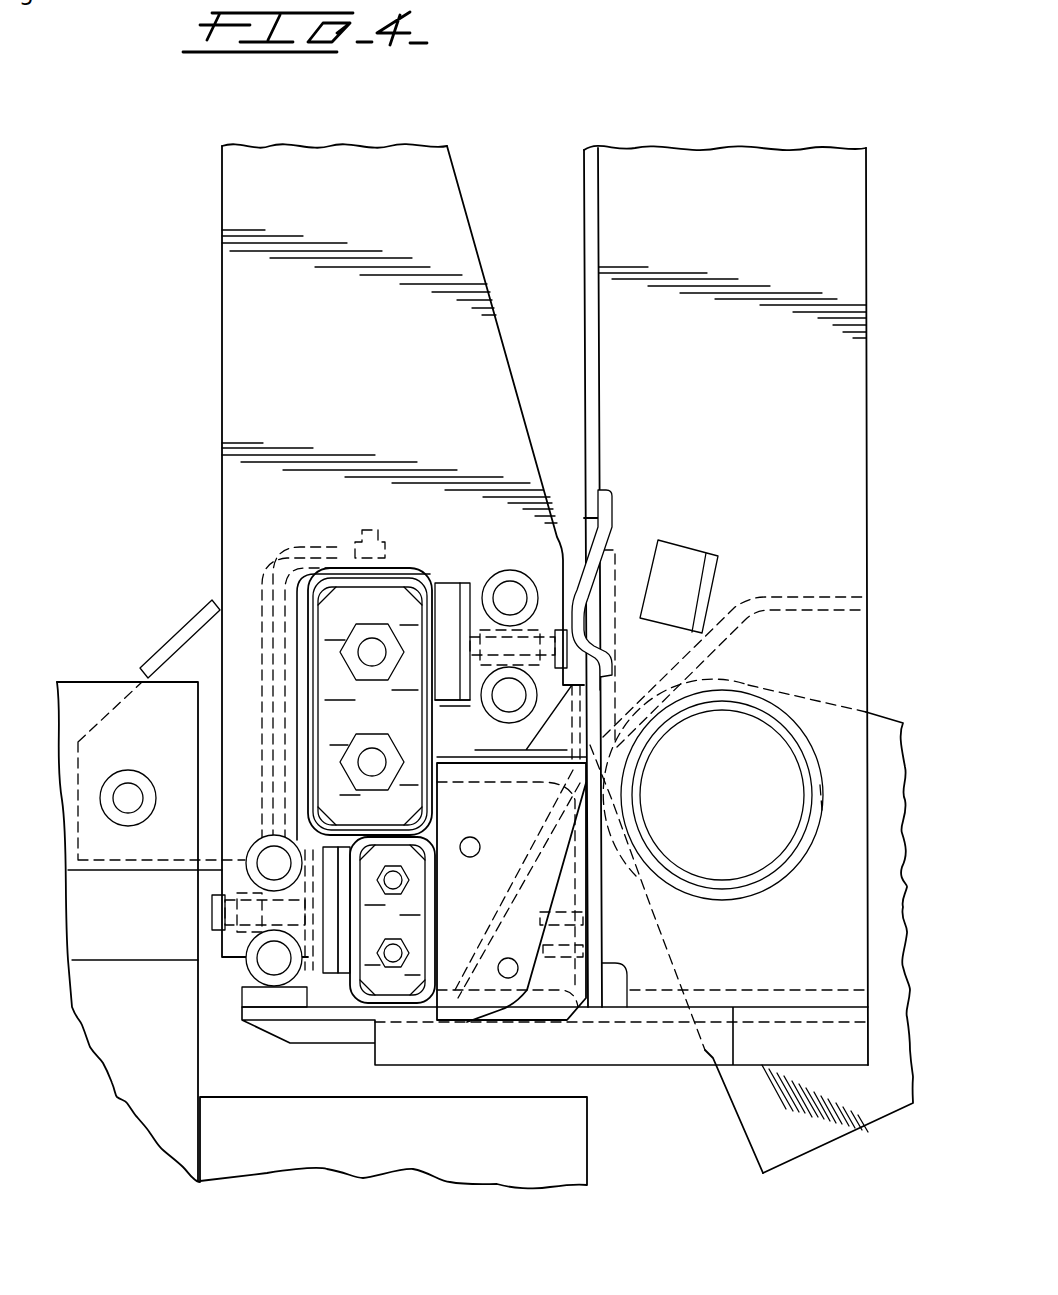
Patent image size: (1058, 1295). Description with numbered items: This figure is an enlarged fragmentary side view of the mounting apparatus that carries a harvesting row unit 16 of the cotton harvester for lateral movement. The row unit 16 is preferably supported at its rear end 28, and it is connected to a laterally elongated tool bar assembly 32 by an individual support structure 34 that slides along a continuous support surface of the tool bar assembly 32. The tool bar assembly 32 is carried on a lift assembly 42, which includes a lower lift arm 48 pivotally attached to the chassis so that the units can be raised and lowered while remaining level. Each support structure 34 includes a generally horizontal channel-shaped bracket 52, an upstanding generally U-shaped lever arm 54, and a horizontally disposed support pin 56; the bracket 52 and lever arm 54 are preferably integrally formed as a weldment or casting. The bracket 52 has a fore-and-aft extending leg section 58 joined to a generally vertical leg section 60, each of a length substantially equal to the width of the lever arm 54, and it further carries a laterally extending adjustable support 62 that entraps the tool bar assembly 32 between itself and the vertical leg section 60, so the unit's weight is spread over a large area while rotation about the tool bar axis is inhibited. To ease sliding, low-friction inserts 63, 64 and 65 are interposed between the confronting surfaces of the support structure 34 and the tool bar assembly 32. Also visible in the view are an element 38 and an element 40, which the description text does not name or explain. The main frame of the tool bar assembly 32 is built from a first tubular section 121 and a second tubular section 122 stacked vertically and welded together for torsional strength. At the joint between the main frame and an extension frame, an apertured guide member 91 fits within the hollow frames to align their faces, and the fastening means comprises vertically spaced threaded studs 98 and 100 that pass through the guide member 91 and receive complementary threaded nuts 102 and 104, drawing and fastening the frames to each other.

The row unit 16 is at (118, 1104).
The rear end 28 is at (560, 1143).
The tool bar assembly 32 is at (294, 644).
The support structure 34 is at (478, 231).
The housing bracket 38 is at (335, 585).
The mounting plate 40 is at (437, 815).
The lift assembly 42 is at (762, 1174).
The lift arm 48 is at (856, 1100).
The channel-shaped bracket 52 is at (382, 556).
The lever arm 54 is at (245, 285).
The support pin 56 is at (141, 783).
The fore-and-aft extending leg section 58 is at (290, 560).
The vertical leg section 60 is at (272, 718).
The adjustable support 62 is at (462, 603).
The insert 63 is at (345, 970).
The insert 64 is at (432, 582).
The insert 65 is at (456, 706).
The guide member 91 is at (328, 660).
The threaded stud 98 is at (371, 655).
The threaded stud 100 is at (369, 764).
The threaded nut 102 is at (397, 608).
The threaded nut 104 is at (405, 720).
The first tubular section 121 is at (312, 610).
The second tubular section 122 is at (433, 920).